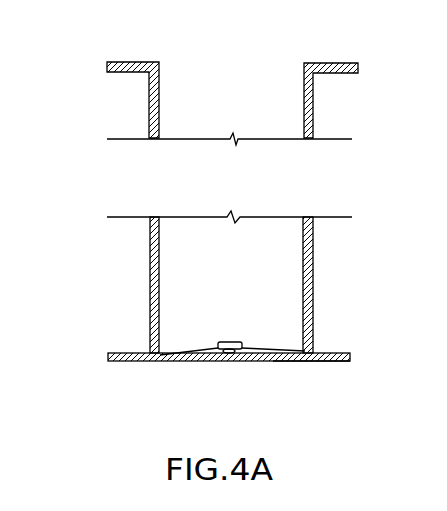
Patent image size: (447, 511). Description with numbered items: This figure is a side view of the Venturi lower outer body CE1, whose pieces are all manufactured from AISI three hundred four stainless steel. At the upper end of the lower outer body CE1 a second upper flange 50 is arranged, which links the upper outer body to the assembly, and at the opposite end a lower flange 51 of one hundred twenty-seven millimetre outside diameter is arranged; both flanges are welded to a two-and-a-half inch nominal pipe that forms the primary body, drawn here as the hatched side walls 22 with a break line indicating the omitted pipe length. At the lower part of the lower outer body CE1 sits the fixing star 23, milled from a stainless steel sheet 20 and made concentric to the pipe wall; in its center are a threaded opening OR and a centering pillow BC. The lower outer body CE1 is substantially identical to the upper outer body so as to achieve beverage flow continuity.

The second upper flange 50 is at (128, 62).
The lower outer body CE1 is at (146, 262).
The side wall 22 is at (148, 285).
The lower flange 51 is at (108, 362).
The sheet 20 is at (188, 361).
The centering pillow BC is at (242, 342).
The threaded opening OR is at (232, 361).
The fixing star 23 is at (273, 363).